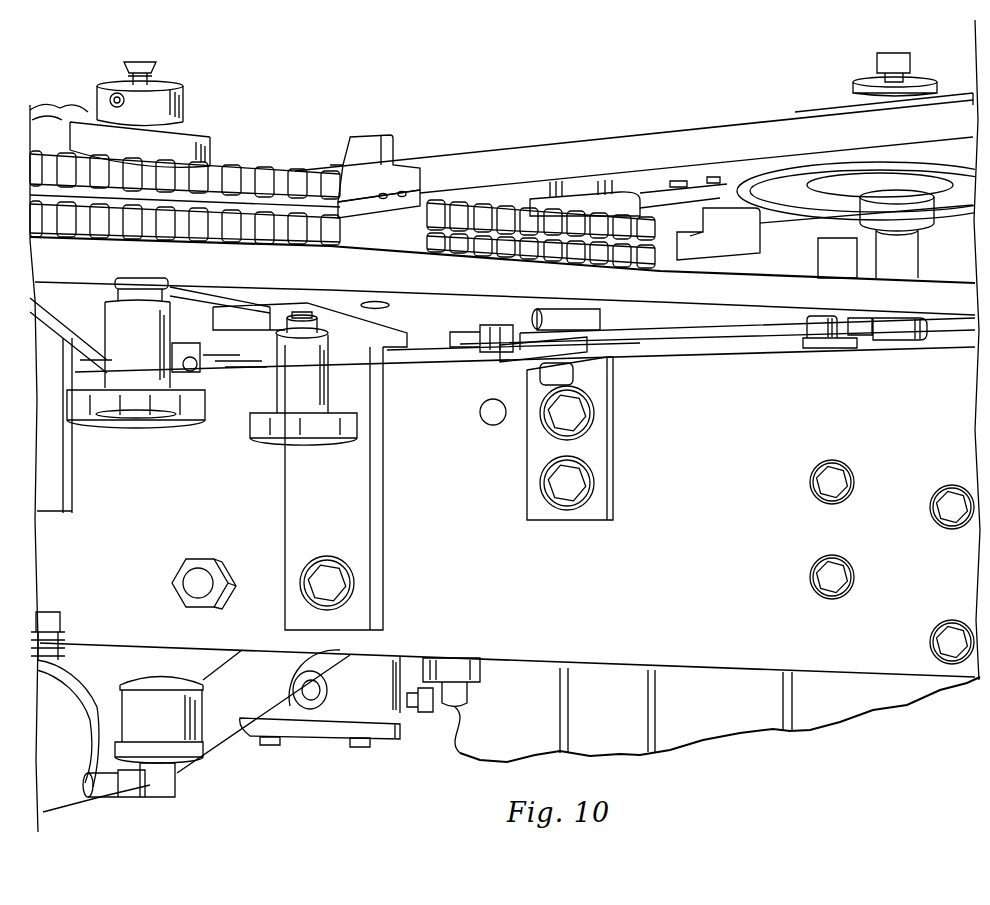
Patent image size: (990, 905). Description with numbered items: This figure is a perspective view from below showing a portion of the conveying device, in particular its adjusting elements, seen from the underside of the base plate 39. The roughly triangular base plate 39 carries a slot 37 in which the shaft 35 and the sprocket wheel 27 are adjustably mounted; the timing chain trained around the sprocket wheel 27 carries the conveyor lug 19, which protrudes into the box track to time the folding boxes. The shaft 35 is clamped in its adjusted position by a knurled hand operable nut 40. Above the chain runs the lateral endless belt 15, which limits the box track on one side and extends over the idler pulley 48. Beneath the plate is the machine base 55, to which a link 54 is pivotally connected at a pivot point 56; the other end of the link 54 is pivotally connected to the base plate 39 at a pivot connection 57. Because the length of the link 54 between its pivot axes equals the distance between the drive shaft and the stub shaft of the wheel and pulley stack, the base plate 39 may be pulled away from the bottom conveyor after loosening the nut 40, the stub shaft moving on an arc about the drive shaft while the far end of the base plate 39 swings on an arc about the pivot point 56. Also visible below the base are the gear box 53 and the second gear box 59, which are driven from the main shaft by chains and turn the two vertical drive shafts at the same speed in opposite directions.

The endless belt 15 is at (683, 145).
The conveyor lug 19 is at (368, 145).
The sprocket wheel 27 is at (183, 112).
The shaft 35 is at (150, 80).
The slot 37 is at (187, 293).
The base plate 39 is at (655, 291).
The knurled hand operable nut 40 is at (313, 384).
The idler pulley 48 is at (863, 165).
The gear box 53 is at (80, 752).
The link 54 is at (708, 340).
The machine base 55 is at (736, 514).
The pivot point 56 is at (553, 385).
The pivot connection 57 is at (822, 338).
The gear box 59 is at (373, 688).